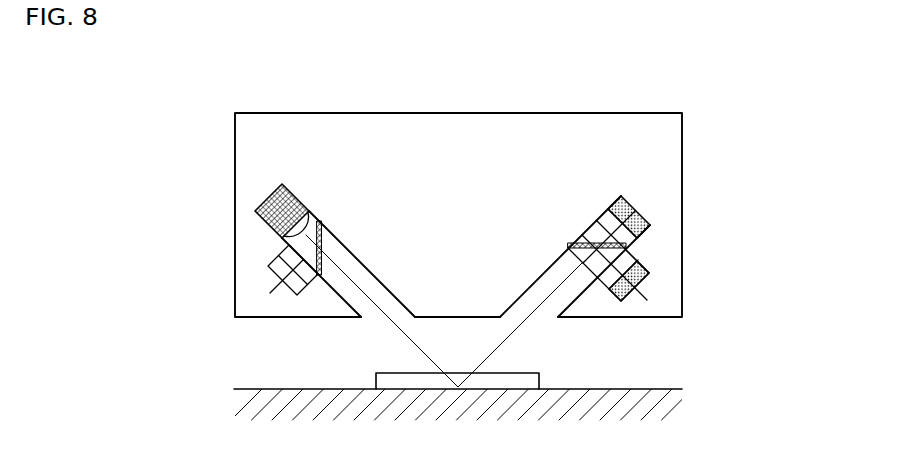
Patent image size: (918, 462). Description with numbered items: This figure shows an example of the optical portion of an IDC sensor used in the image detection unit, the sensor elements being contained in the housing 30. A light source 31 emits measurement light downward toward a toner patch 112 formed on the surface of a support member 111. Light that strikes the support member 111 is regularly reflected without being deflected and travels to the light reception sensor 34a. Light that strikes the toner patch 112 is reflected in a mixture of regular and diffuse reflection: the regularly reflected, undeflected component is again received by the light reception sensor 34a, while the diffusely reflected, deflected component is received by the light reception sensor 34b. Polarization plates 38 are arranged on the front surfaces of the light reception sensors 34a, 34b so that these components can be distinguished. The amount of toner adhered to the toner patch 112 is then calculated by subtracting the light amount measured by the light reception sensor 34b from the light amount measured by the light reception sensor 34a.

The sensor housing 30 is at (545, 113).
The light source 31 is at (289, 186).
The light reception sensor 34a is at (636, 198).
The light reception sensor 34b is at (651, 265).
The polarization plates 38 is at (331, 225).
The support member 111 is at (648, 389).
The toner patch 112 is at (386, 372).